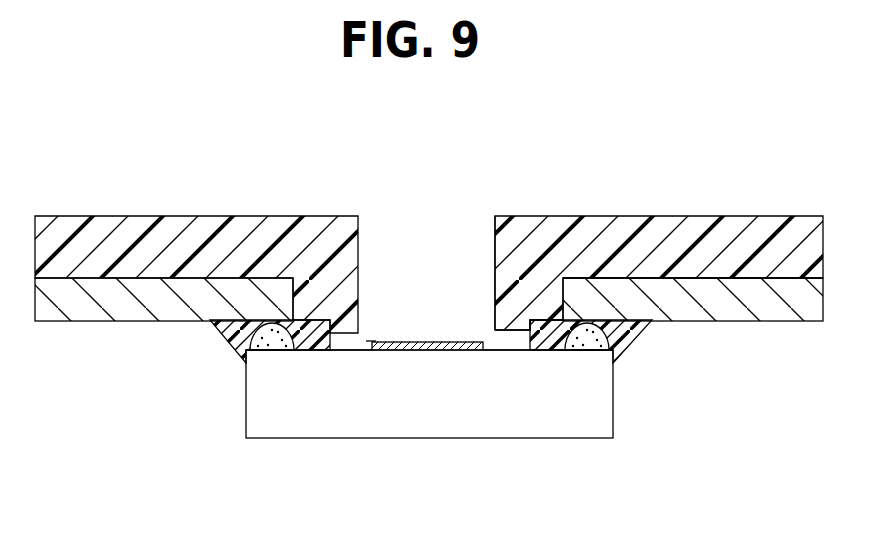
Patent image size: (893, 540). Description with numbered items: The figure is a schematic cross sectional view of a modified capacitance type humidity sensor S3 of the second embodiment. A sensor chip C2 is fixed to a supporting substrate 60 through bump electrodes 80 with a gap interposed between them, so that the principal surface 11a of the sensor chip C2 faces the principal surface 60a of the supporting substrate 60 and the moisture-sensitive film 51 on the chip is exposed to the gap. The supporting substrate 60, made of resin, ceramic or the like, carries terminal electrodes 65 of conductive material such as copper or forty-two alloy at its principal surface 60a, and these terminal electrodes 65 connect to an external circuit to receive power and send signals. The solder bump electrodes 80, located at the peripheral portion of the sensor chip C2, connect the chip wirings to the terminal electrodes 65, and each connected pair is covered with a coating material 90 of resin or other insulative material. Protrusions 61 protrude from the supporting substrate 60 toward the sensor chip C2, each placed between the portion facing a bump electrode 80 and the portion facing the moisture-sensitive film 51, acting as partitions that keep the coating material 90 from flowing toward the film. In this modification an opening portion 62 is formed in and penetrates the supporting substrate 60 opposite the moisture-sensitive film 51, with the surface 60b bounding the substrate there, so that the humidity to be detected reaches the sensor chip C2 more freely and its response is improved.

The modified sensor S3 is at (672, 153).
The supporting substrate 60 is at (730, 234).
The principal surface of the supporting substrate 60a is at (543, 320).
The upper portion of frame 60b is at (597, 243).
The opening portion 62 is at (497, 283).
The terminal electrodes 65 is at (92, 313).
The coating material 90 is at (218, 343).
The bump electrodes 80 is at (267, 333).
The protrusions 61 is at (340, 351).
The moisture-sensitive film 51 is at (424, 340).
The principal surface of the sensor chip 11a is at (371, 340).
The sensor chip C2 is at (538, 402).